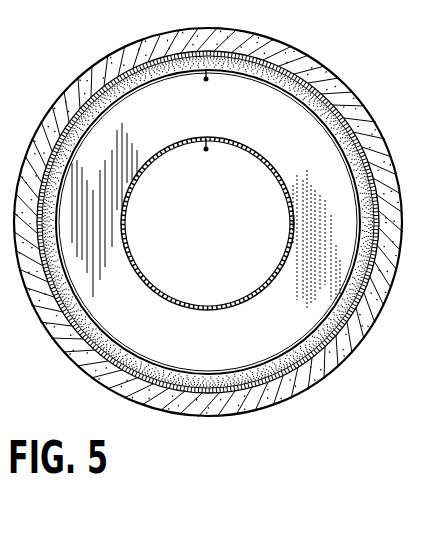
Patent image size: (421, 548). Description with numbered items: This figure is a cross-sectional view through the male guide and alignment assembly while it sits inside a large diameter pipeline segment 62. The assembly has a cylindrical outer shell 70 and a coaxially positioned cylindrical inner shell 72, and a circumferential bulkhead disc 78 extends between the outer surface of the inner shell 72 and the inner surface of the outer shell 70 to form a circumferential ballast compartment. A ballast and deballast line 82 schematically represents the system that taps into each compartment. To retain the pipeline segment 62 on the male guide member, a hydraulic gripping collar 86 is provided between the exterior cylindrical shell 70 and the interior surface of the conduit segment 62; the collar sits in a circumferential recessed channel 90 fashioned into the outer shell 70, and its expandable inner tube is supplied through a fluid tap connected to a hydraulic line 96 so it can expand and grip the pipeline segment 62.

The pipeline segment 62 is at (326, 373).
The cylindrical outer shell 70 is at (103, 85).
The cylindrical inner shell 72 is at (196, 306).
The circumferential bulkhead disc 78 is at (309, 165).
The ballast and deballast line 82 is at (206, 151).
The hydraulic gripping collar 86 is at (311, 113).
The circumferential recessed channel 90 is at (181, 373).
The hydraulic line 96 is at (208, 81).